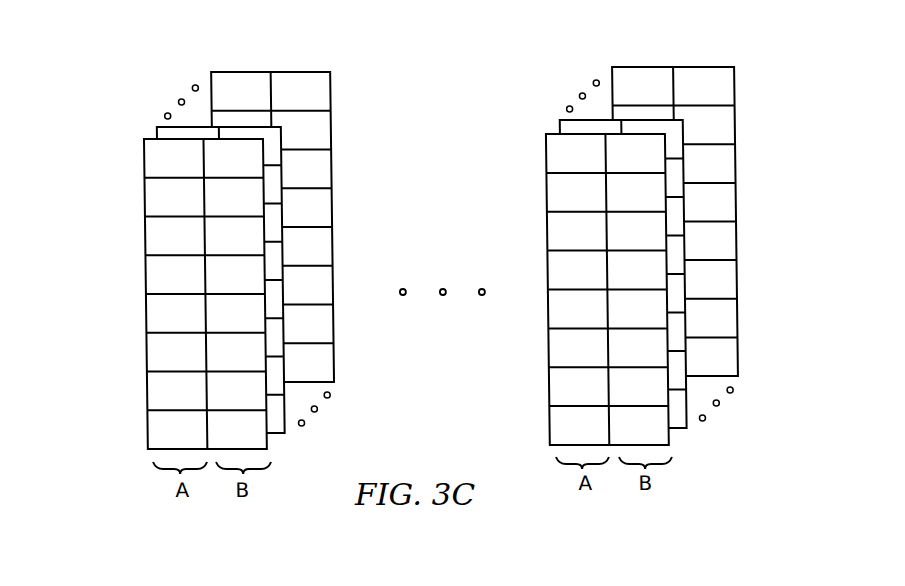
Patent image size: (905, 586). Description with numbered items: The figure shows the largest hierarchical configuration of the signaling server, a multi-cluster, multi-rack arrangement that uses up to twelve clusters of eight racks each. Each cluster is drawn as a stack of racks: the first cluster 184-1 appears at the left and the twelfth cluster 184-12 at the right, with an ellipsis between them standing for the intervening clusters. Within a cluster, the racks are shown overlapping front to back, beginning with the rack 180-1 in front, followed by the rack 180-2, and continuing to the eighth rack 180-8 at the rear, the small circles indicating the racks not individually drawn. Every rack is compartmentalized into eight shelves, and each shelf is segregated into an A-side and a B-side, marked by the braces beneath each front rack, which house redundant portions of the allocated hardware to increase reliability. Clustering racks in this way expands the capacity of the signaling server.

The rack 180-1 is at (143, 210).
The rack 180-2 is at (155, 129).
The rack 180-8 is at (334, 164).
The cluster 184-1 is at (351, 72).
The cluster 184-12 is at (753, 67).